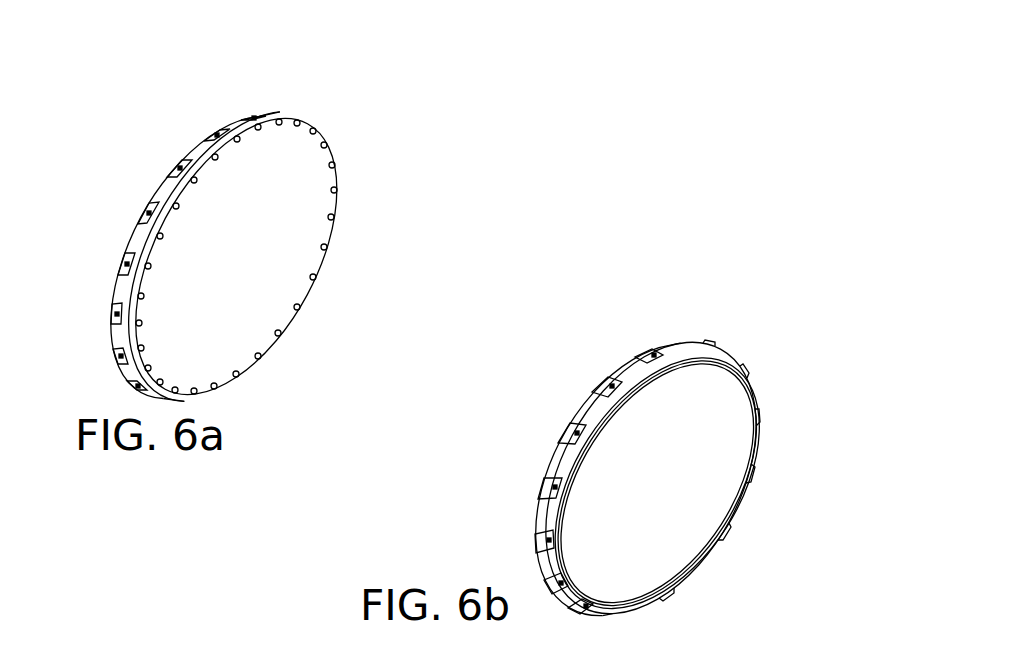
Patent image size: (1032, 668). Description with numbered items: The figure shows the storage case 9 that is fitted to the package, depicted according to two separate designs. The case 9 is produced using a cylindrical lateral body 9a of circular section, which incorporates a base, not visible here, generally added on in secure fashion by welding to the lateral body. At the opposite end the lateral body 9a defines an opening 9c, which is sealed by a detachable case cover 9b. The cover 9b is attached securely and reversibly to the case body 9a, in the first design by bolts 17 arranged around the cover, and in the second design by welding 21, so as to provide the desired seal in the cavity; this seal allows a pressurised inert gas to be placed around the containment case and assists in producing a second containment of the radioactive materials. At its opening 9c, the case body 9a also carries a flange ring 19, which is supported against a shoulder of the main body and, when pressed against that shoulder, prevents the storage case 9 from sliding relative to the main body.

In FIG. 6a, the storage case 9 is at (240, 104).
In FIG. 6b, the storage case 9 is at (636, 328).
In FIG. 6a, the cylindrical lateral body 9a is at (112, 341).
In FIG. 6b, the cylindrical lateral body 9a is at (540, 563).
In FIG. 6a, the detachable case cover 9b is at (308, 227).
In FIG. 6b, the detachable case cover 9b is at (690, 528).
In FIG. 6a, the opening 9c is at (308, 195).
In FIG. 6b, the opening 9c is at (677, 548).
In FIG. 6a, the bolts 17 is at (258, 137).
In FIG. 6a, the flange ring 19 is at (150, 208).
In FIG. 6b, the flange ring 19 is at (570, 433).
In FIG. 6b, the welding 21 is at (550, 475).